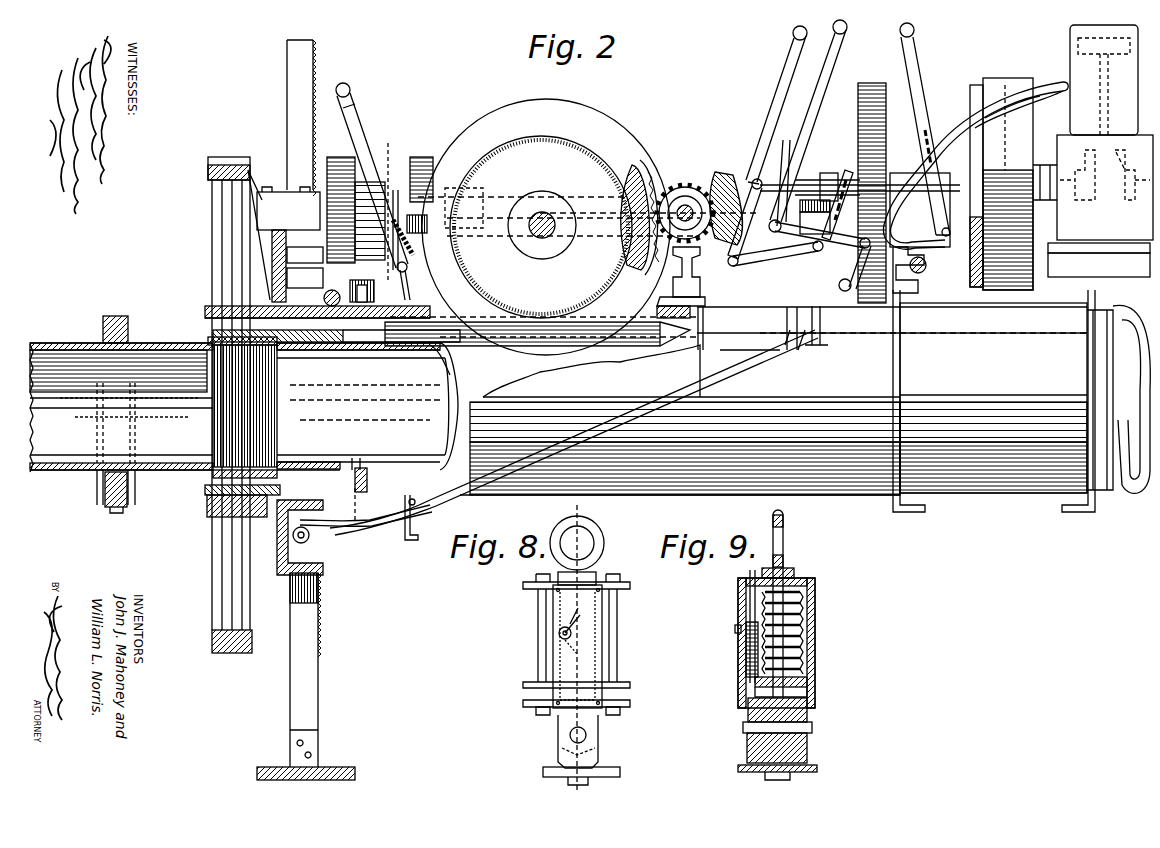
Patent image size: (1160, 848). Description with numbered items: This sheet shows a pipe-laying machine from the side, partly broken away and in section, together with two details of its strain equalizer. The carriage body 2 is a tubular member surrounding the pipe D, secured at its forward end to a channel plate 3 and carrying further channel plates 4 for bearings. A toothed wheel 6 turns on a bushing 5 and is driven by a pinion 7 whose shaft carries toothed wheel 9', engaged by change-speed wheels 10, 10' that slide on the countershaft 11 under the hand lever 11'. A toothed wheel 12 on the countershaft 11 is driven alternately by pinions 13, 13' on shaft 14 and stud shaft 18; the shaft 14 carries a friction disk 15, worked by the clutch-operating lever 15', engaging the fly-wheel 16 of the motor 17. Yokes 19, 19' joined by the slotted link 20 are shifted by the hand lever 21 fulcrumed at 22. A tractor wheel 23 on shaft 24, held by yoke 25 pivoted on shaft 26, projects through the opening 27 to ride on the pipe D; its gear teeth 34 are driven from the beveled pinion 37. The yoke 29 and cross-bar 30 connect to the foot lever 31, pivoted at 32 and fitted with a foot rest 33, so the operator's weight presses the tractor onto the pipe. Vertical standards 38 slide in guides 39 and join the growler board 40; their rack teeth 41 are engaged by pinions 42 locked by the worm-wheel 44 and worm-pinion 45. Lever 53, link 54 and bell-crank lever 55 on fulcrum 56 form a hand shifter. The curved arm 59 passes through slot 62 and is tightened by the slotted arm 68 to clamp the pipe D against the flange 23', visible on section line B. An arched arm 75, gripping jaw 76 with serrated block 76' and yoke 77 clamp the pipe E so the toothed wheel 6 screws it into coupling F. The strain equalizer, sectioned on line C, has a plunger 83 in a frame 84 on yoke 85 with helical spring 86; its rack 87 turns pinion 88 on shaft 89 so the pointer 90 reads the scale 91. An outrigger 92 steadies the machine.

In FIG. 2, the carriage body 2 is at (786, 399).
In FIG. 2, the channel plate 3 is at (320, 572).
In FIG. 2, the channel plates 4 is at (1070, 514).
In FIG. 2, the bushing 5 is at (205, 308).
In FIG. 2, the toothed wheel 6 is at (225, 157).
In FIG. 2, the pinion 7 is at (252, 182).
In FIG. 2, the toothed wheel 9' is at (420, 176).
In FIG. 2, the toothed wheel 10 is at (334, 188).
In FIG. 2, the toothed wheel 10' is at (360, 197).
In FIG. 2, the countershaft 11 is at (404, 201).
In FIG. 2, the hand lever 11' is at (372, 177).
In FIG. 2, the toothed wheel 12 is at (871, 82).
In FIG. 2, the pinion 13 is at (827, 163).
In FIG. 2, the pinion 13' is at (815, 197).
In FIG. 2, the shaft 14 is at (880, 180).
In FIG. 2, the friction disk 15 is at (975, 176).
In FIG. 2, the clutch-operating lever 15' is at (929, 129).
In FIG. 2, the fly-wheel 16 is at (1005, 77).
In FIG. 2, the motor 17 is at (1072, 40).
In FIG. 2, the stud shaft 18 is at (900, 234).
In FIG. 2, the yoke 19 is at (832, 191).
In FIG. 2, the yoke 19' is at (783, 186).
In FIG. 2, the link 20 is at (826, 277).
In FIG. 2, the hand lever 21 is at (781, 90).
In FIG. 2, the fulcrum 22 is at (756, 175).
In FIG. 2, the tractor wheel 23 is at (546, 215).
In FIG. 2, the flange 23' is at (537, 348).
In FIG. 2, the shaft 24 is at (547, 212).
In FIG. 2, the yoke 25 is at (412, 250).
In FIG. 2, the shaft 26 is at (683, 200).
In FIG. 2, the opening 27 is at (681, 282).
In FIG. 2, the yoke 29 is at (412, 292).
In FIG. 2, the cross-bar 30 is at (410, 541).
In FIG. 2, the foot lever 31 is at (445, 508).
In FIG. 2, the pivot 32 is at (311, 540).
In FIG. 2, the foot rest 33 is at (805, 335).
In FIG. 2, the gear teeth 34 is at (640, 163).
In FIG. 2, the beveled pinion 37 is at (725, 178).
In FIG. 2, the vertical standards 38 is at (290, 680).
In FIG. 2, the guides 39 is at (313, 517).
In FIG. 2, the growler board 40 is at (265, 767).
In FIG. 2, the rack teeth 41 is at (322, 632).
In FIG. 2, the pinions 42 is at (305, 278).
In FIG. 2, the worm-wheel 44 is at (305, 256).
In FIG. 2, the worm-pinion 45 is at (324, 299).
In FIG. 2, the lever 53 is at (856, 269).
In FIG. 2, the link 54 is at (838, 283).
In FIG. 2, the bell-crank lever 55 is at (808, 121).
In FIG. 2, the fulcrum 56 is at (761, 234).
In FIG. 2, the curved arm 59 is at (358, 458).
In FIG. 2, the circumferential slot 62 is at (366, 470).
In FIG. 2, the slotted arm 68 is at (363, 282).
In FIG. 2, the arched arm 75 is at (110, 316).
In FIG. 2, the gripping jaw 76 is at (94, 494).
In FIG. 2, the block 76' is at (105, 521).
In FIG. 2, the yoke 77 is at (97, 481).
In FIG. 8, the plunger 83 is at (620, 684).
In FIG. 9, the plunger 83 is at (808, 680).
In FIG. 8, the frame 84 is at (560, 672).
In FIG. 9, the frame 84 is at (815, 612).
In FIG. 8, the yoke 85 is at (560, 740).
In FIG. 9, the yoke 85 is at (807, 748).
In FIG. 9, the helical spring 86 is at (805, 650).
In FIG. 8, the toothed rack 87 is at (558, 574).
In FIG. 9, the toothed rack 87 is at (760, 666).
In FIG. 9, the pinion 88 is at (748, 612).
In FIG. 8, the shaft 89 is at (558, 634).
In FIG. 9, the shaft 89 is at (748, 640).
In FIG. 8, the pointer 90 is at (565, 622).
In FIG. 9, the pointer 90 is at (735, 628).
In FIG. 8, the scale 91 is at (596, 626).
In FIG. 2, the outrigger 92 is at (926, 270).
In FIG. 2, the section line B— B is at (380, 154).
In FIG. 8, the section line C— C is at (600, 642).
In FIG. 2, the pipe D is at (1140, 490).
In FIG. 2, the pipe E is at (48, 343).
In FIG. 2, the coupling F is at (212, 478).